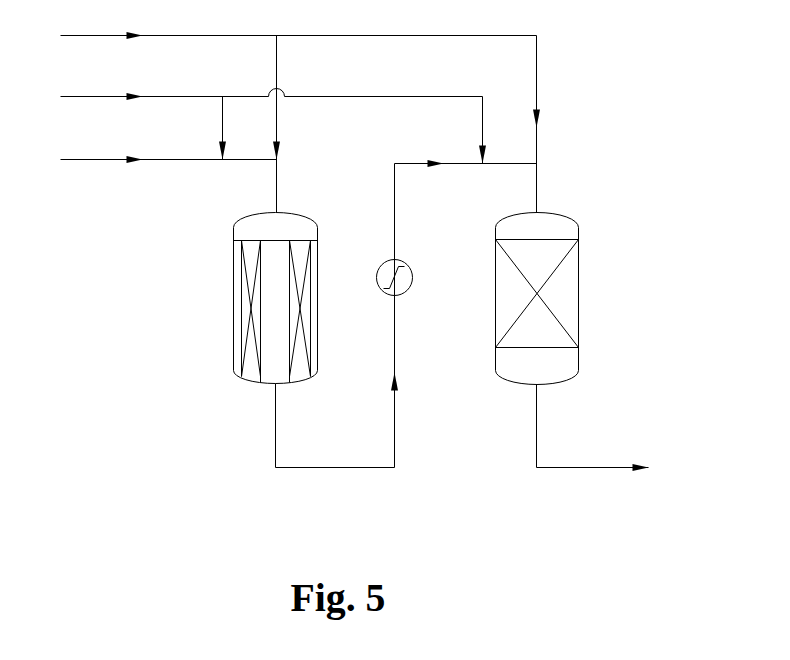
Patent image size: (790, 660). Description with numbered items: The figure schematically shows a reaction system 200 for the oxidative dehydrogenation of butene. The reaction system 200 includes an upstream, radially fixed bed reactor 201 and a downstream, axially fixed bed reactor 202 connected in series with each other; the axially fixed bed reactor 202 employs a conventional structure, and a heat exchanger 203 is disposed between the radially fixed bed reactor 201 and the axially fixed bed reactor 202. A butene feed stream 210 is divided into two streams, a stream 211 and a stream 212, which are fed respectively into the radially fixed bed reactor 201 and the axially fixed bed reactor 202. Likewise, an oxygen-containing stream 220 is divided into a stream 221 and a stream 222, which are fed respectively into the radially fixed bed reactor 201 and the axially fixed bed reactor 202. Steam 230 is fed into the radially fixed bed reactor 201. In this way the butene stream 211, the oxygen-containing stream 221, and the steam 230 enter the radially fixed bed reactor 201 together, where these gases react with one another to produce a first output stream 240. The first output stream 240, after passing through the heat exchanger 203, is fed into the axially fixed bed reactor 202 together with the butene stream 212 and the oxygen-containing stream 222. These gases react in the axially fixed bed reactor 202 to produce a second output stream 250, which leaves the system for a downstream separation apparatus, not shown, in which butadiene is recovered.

The reaction system 200 is at (152, 238).
The radially fixed bed reactor 201 is at (317, 350).
The axially fixed bed reactor 202 is at (578, 347).
The heat exchanger 203 is at (407, 264).
The butene feed stream 210 is at (299, 27).
The stream 211 is at (297, 124).
The stream 212 is at (557, 124).
The oxygen-containing stream 220 is at (272, 88).
The stream 221 is at (241, 128).
The stream 222 is at (503, 130).
The steam 230 is at (169, 151).
The first output stream 240 is at (406, 314).
The second output stream 250 is at (593, 428).